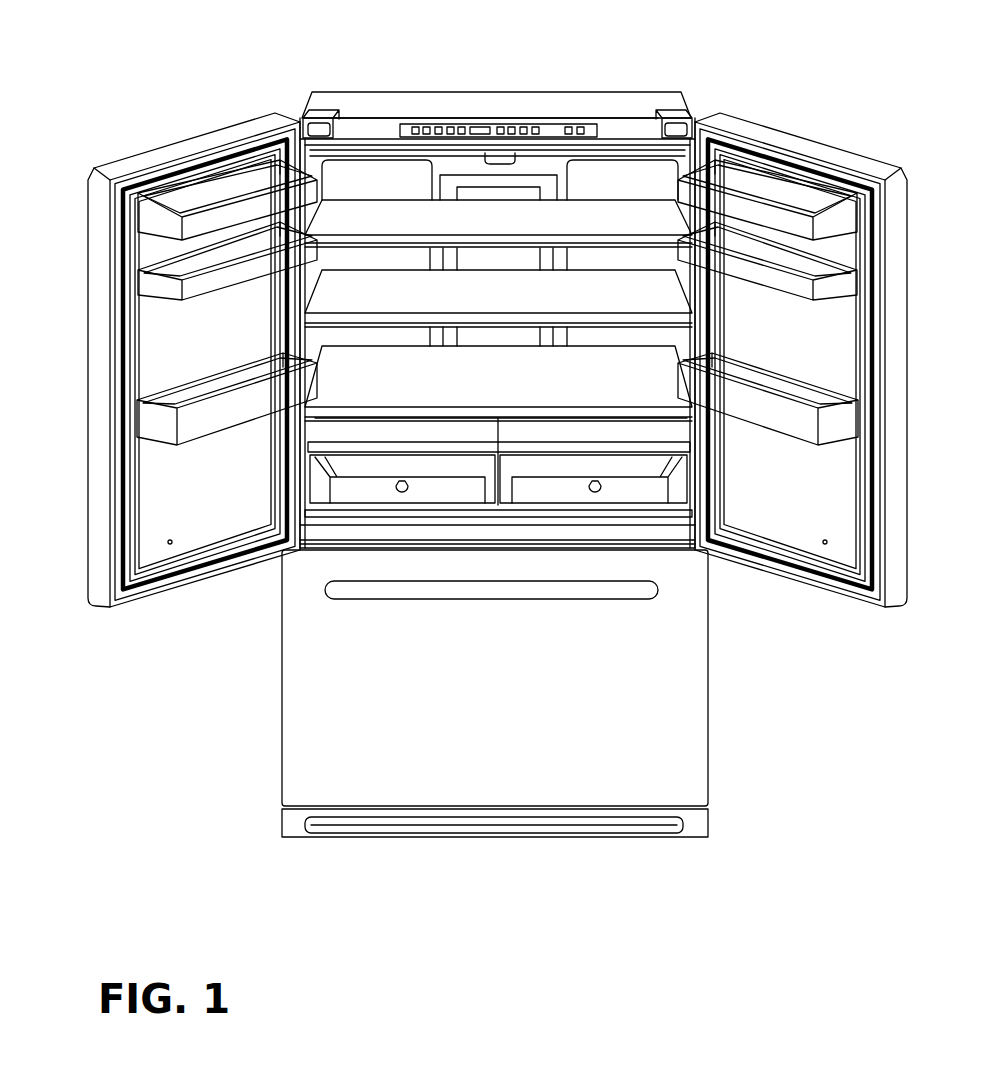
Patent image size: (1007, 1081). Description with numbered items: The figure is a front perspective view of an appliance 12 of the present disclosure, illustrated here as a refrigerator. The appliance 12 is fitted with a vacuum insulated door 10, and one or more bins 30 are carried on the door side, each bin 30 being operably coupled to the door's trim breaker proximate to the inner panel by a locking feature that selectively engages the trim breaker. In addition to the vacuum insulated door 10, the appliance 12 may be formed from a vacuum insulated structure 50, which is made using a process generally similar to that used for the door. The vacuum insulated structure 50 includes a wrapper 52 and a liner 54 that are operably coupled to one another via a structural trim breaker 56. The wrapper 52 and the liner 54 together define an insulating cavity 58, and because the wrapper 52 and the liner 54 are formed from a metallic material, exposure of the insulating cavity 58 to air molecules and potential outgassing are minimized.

The appliance 12 is at (237, 74).
The vacuum insulated door 10 is at (157, 154).
The bin 30 is at (150, 418).
The vacuum insulated structure 50 is at (415, 103).
The wrapper 52 is at (688, 107).
The liner 54 is at (615, 128).
The structural trim breaker 56 is at (351, 145).
The insulating cavity 58 is at (508, 107).